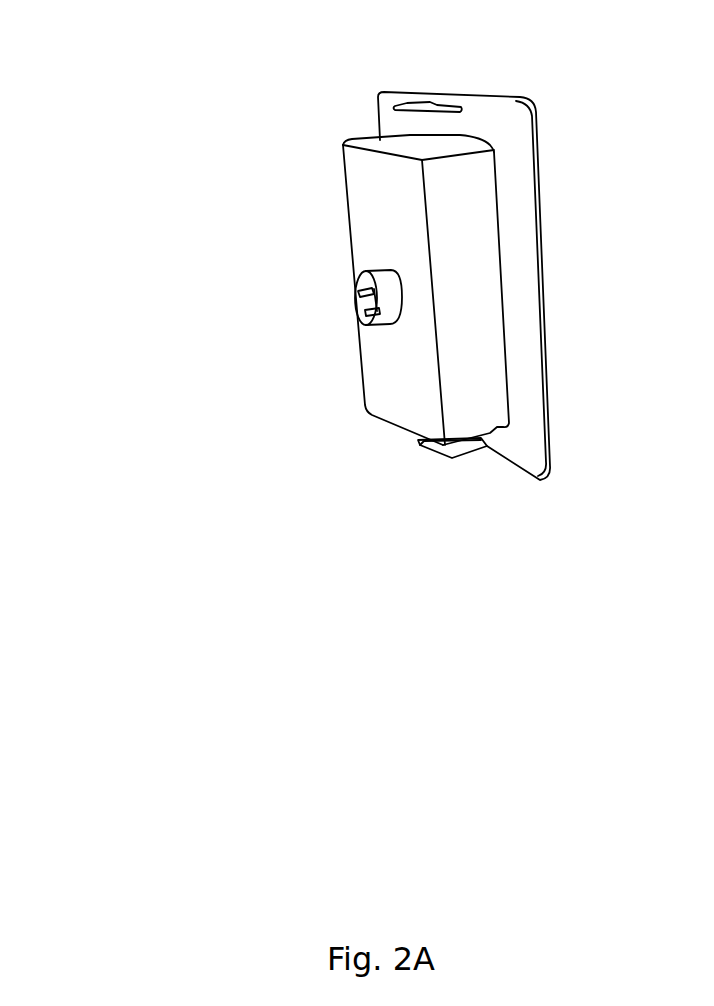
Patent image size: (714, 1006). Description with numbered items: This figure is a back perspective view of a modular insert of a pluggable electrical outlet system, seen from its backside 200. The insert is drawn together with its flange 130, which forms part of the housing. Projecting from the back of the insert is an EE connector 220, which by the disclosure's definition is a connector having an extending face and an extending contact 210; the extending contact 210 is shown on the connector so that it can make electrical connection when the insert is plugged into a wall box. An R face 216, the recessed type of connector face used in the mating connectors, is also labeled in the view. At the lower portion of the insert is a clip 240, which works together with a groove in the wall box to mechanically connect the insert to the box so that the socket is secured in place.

The backside 200 is at (290, 93).
The flange 130 is at (482, 117).
The extending (E) contact 210 is at (353, 310).
The R face 216 is at (353, 283).
The EE connector 220 is at (392, 312).
The clip 240 is at (425, 442).